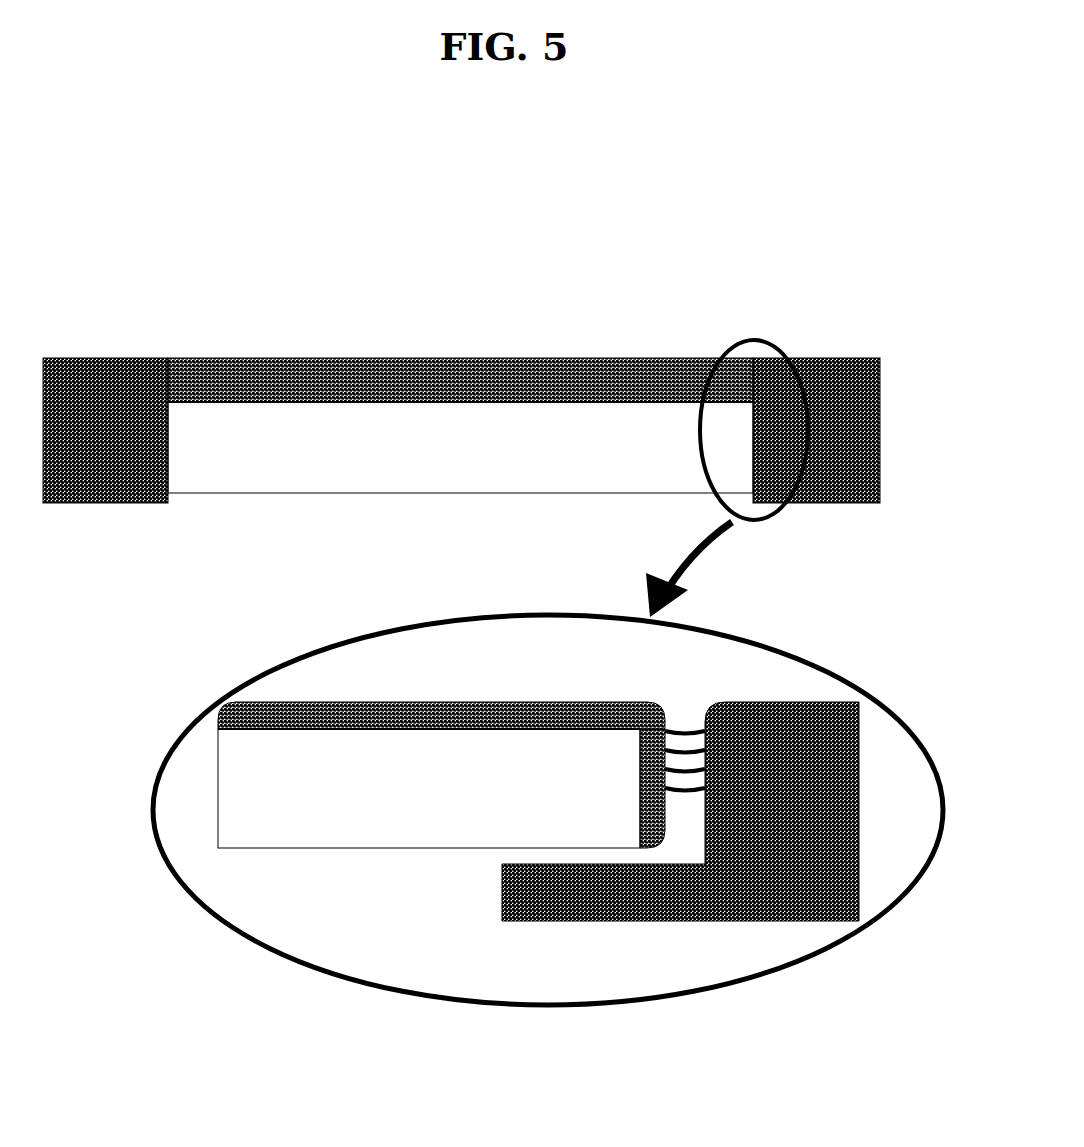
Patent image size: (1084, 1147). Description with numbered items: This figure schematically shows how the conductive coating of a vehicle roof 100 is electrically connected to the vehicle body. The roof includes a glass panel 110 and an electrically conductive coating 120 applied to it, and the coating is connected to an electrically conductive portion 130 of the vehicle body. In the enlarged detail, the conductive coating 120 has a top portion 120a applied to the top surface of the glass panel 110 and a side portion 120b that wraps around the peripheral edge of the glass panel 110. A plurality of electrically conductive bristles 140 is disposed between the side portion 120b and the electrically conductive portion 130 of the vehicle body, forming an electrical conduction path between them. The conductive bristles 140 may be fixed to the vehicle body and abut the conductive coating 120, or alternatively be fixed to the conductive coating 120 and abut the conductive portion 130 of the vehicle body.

The vehicle roof 100 is at (352, 298).
The glass panel 110 is at (372, 468).
The conductive coating 120 is at (460, 675).
The top portion 120a is at (352, 713).
The side portion 120b is at (650, 828).
The electrically conductive portion 130 is at (95, 378).
The electrically conductive bristles 140 is at (688, 727).